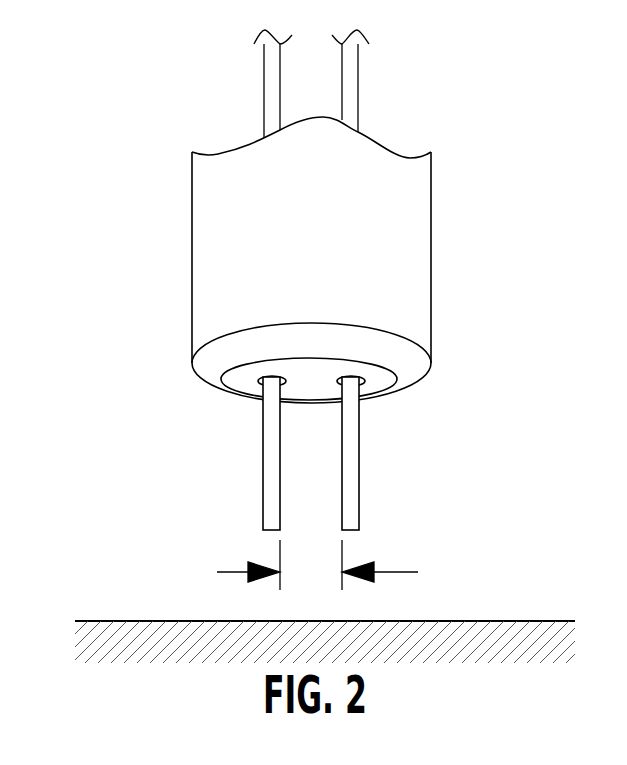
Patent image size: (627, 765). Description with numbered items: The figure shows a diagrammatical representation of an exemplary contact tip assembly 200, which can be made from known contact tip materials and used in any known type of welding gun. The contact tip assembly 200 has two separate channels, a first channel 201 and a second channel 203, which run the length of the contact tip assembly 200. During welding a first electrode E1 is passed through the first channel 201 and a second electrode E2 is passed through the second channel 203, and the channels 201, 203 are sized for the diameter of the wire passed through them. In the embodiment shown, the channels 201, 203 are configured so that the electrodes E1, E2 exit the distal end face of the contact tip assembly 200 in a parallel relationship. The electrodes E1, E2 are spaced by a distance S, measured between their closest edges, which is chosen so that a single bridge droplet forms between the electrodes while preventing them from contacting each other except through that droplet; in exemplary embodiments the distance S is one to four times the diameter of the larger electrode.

The contact tip assembly 200 is at (431, 203).
The first channel 201 is at (258, 380).
The second channel 203 is at (365, 381).
The first electrode E1 is at (272, 466).
The second electrode E2 is at (350, 458).
The distance S is at (317, 565).